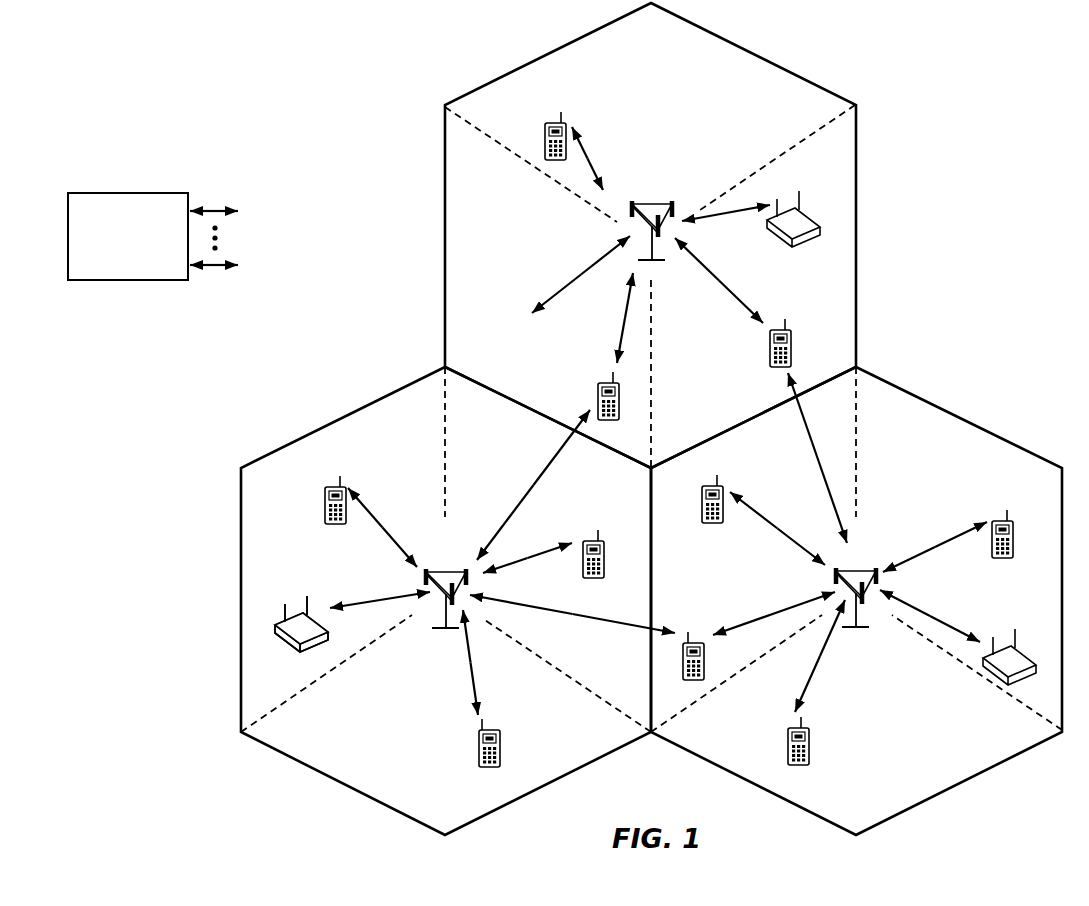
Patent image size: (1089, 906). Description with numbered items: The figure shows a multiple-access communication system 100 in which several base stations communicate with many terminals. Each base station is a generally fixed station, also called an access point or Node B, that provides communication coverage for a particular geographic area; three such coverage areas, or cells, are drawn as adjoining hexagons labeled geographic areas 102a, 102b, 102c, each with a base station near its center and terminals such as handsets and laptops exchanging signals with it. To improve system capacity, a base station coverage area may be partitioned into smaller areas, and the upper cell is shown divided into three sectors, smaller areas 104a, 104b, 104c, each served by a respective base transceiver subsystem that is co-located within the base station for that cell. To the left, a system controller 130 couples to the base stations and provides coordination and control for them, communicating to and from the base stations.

The multiple-access communication system 100 is at (998, 68).
The geographic area 102a is at (767, 42).
The geographic area 102b is at (341, 418).
The geographic area 102c is at (960, 418).
The smaller area 104a is at (673, 62).
The smaller area 104b is at (502, 209).
The smaller area 104c is at (744, 407).
The system controller 130 is at (127, 192).